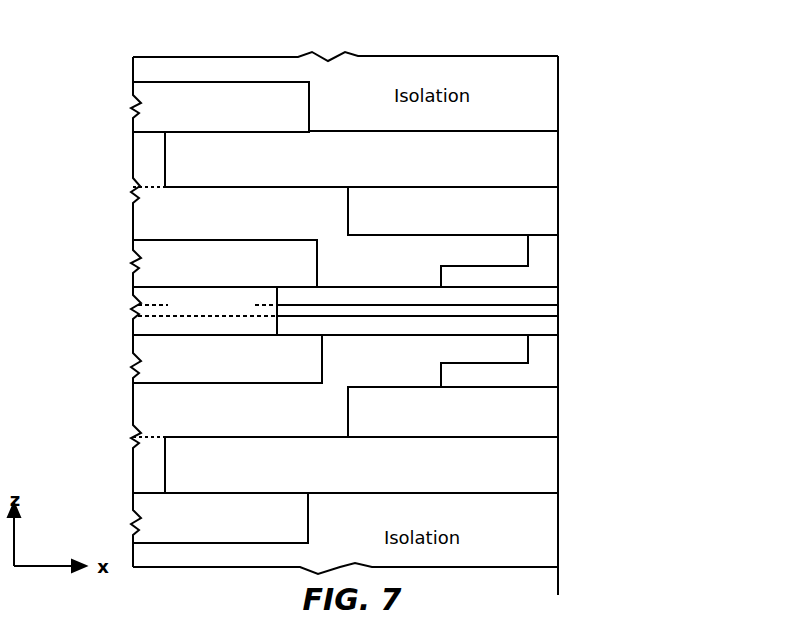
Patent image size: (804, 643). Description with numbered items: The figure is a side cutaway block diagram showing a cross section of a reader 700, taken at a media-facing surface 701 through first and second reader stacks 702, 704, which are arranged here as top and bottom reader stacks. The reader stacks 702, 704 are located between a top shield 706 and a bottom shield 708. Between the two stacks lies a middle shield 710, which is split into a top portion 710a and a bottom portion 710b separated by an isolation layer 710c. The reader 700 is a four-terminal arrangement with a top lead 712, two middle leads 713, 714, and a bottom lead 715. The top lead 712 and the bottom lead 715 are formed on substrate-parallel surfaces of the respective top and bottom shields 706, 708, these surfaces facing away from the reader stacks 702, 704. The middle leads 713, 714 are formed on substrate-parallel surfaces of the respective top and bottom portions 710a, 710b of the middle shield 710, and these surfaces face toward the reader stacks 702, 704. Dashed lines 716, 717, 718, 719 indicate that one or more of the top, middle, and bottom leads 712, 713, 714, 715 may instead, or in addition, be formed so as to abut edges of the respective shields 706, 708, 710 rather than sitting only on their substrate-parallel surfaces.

The reader 700 is at (600, 55).
The media-facing surface 701 is at (556, 583).
The first reader stack 702 is at (572, 188).
The second reader stack 704 is at (572, 332).
The top shield 706 is at (553, 153).
The bottom shield 708 is at (551, 474).
The middle shield 710 is at (572, 293).
The top portion of middle shield 710a is at (356, 290).
The bottom portion of middle shield 710b is at (363, 340).
The isolation layer 710c is at (427, 310).
The top lead 712 is at (131, 105).
The middle lead 713 is at (131, 259).
The middle lead 714 is at (133, 368).
The bottom lead 715 is at (131, 528).
The dashed line 716 is at (133, 190).
The dashed line 717 is at (133, 305).
The dashed line 718 is at (133, 316).
The dashed line 719 is at (133, 437).